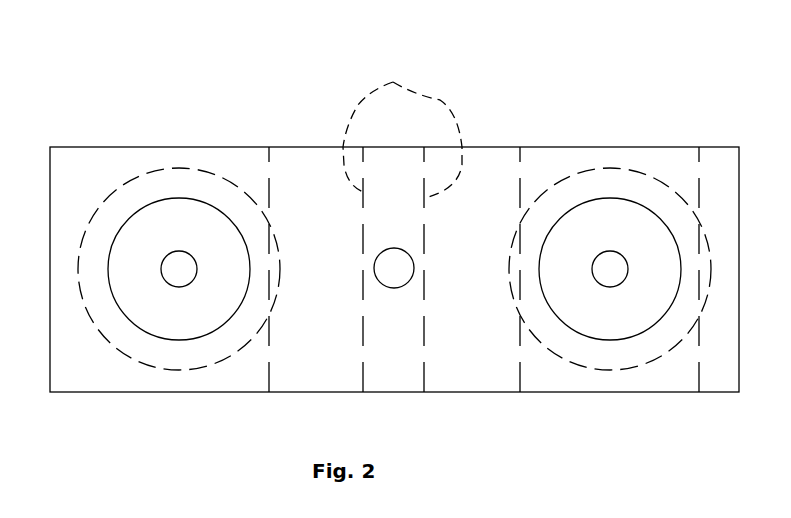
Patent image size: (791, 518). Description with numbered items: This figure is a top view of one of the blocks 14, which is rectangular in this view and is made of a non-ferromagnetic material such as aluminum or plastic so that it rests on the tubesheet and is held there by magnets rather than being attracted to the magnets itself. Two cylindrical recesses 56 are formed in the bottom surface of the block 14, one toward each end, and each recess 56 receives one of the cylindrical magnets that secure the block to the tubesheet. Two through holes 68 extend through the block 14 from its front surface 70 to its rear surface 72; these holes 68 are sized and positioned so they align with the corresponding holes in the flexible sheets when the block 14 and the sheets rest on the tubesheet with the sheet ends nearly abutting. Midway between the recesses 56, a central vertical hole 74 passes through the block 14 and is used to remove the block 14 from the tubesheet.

The block 14 is at (674, 74).
The cylindrical recess 56 is at (115, 200).
The through hole 68 is at (402, 129).
The front surface 70 is at (105, 392).
The rear surface 72 is at (245, 147).
The central vertical hole 74 is at (402, 287).